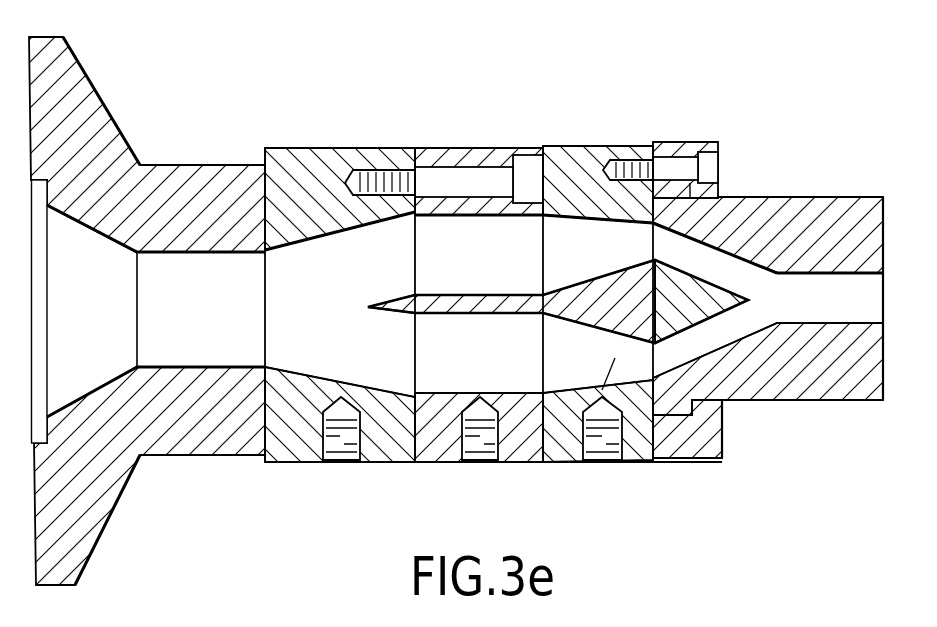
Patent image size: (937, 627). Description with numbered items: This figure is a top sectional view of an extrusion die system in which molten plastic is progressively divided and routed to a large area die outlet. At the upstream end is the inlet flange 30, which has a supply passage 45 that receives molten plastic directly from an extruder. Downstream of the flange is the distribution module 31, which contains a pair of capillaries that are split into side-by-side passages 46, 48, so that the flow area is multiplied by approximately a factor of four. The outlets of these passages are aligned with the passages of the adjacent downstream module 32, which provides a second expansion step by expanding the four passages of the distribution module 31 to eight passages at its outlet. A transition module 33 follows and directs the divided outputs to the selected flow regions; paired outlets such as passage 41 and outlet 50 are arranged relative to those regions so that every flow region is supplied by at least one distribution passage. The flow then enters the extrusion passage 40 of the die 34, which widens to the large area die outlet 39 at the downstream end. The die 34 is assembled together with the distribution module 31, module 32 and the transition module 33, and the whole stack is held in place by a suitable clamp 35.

The inlet flange 30 is at (88, 98).
The distribution module 31 is at (333, 152).
The module 32 is at (507, 148).
The transition module 33 is at (600, 144).
The die 34 is at (825, 197).
The clamp 35 is at (683, 145).
The die outlet 39 is at (822, 313).
The extrusion passage 40 is at (713, 262).
The passage 41 is at (488, 272).
The supply passage 45 is at (220, 304).
The passage 46 is at (372, 281).
The passage 48 is at (348, 395).
The outlet 50 is at (492, 361).